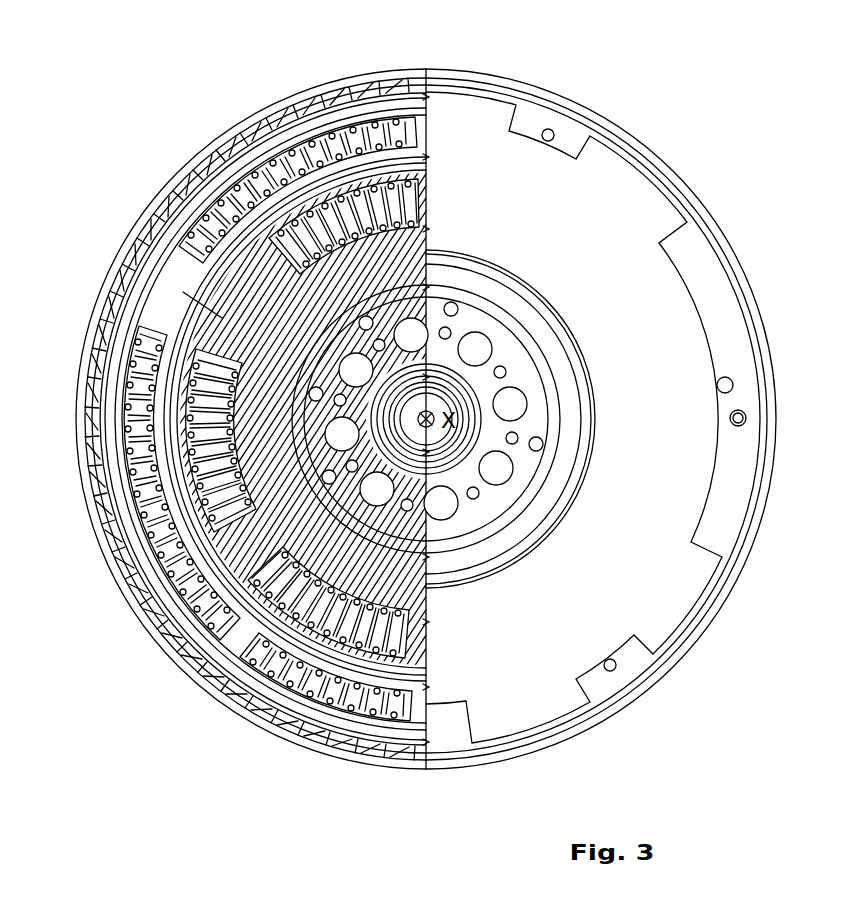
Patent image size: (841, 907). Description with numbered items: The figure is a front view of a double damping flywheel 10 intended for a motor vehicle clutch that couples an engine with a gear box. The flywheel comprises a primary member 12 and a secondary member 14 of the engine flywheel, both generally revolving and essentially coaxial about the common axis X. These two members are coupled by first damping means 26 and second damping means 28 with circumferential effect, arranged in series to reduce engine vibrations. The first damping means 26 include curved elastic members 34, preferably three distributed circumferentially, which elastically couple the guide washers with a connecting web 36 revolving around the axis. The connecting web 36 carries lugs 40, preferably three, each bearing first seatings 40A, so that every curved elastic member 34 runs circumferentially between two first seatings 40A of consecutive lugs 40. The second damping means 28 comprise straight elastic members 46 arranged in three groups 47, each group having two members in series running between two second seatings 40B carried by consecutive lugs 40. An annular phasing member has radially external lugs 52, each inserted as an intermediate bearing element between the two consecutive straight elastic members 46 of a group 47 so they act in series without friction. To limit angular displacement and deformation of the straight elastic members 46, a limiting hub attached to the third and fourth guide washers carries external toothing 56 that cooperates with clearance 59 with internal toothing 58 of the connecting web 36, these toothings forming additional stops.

The double damping flywheel 10 is at (662, 103).
The primary member 12 is at (310, 102).
The secondary member 14 is at (540, 120).
The first damping means 26 is at (432, 120).
The second damping means 28 is at (448, 235).
The curved elastic member 34 is at (378, 105).
The connecting web 36 is at (220, 294).
The lug 40 is at (160, 240).
The first seating 40A is at (183, 270).
The second seating 40B is at (222, 178).
The straight elastic member 46 is at (117, 408).
The group of straight elastic members 47 is at (120, 512).
The radially external lug 52 is at (152, 623).
The external toothing 56 is at (500, 282).
The internal toothing 58 is at (230, 413).
The clearance 59 is at (252, 140).